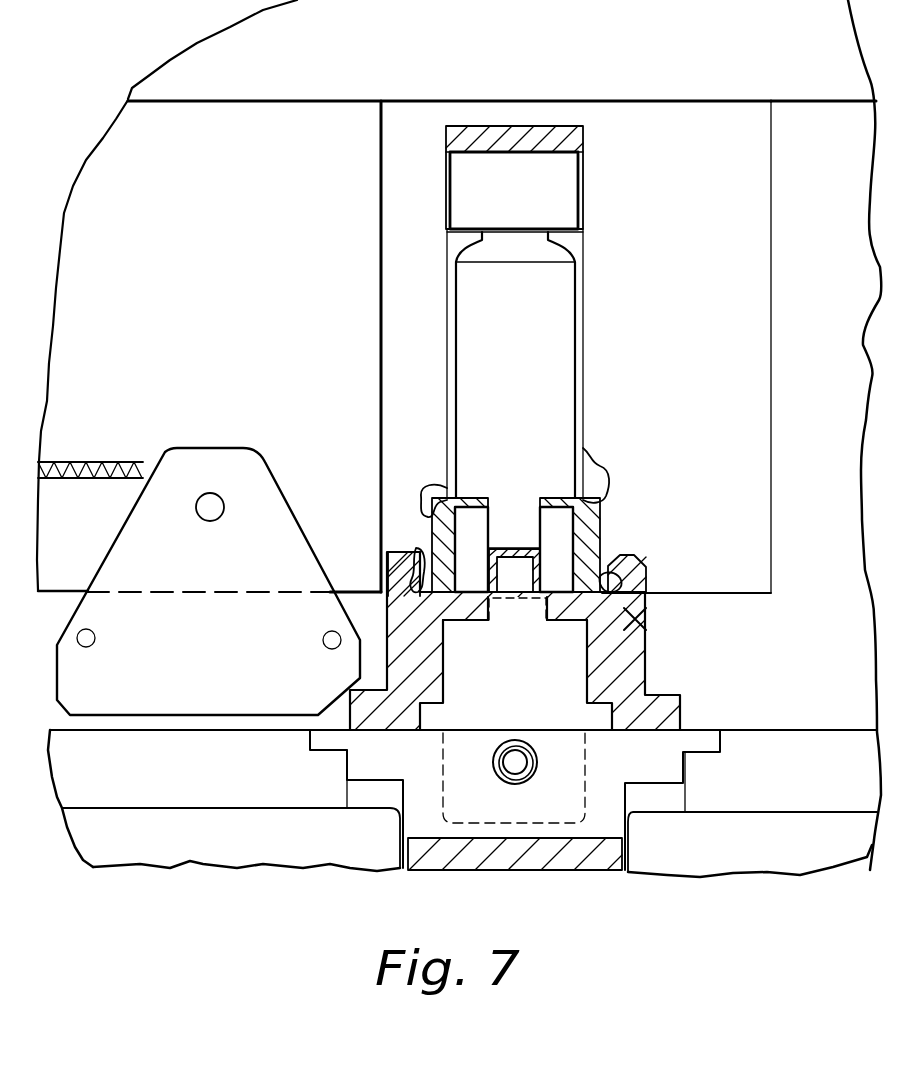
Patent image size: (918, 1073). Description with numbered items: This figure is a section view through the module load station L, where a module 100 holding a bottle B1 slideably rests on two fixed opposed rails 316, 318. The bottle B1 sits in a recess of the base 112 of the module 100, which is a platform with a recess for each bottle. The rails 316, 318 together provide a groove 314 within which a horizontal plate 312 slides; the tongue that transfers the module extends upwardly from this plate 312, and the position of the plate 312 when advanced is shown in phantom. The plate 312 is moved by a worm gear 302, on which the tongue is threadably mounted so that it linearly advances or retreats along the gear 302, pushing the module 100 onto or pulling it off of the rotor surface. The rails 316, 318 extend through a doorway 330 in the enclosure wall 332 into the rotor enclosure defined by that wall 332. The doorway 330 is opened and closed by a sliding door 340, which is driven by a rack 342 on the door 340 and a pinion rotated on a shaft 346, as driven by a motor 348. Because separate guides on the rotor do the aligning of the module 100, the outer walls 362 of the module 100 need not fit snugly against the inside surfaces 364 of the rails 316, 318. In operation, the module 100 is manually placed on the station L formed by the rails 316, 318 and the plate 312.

The sliding door 340 is at (268, 270).
The enclosure wall 332 is at (836, 255).
The doorway 330 is at (771, 296).
The module 100 is at (588, 393).
The bottle B1 is at (530, 369).
The outer walls 362 is at (445, 500).
The base 112 is at (512, 538).
The groove 314 is at (497, 615).
The horizontal plate 312 is at (525, 620).
The rail 316 is at (416, 552).
The rail 318 is at (640, 560).
The inside surfaces 364 is at (395, 600).
The module load station L is at (645, 624).
The motor 348 is at (233, 635).
The shaft 346 is at (211, 493).
The rack 342 is at (68, 478).
The worm gear 302 is at (538, 762).